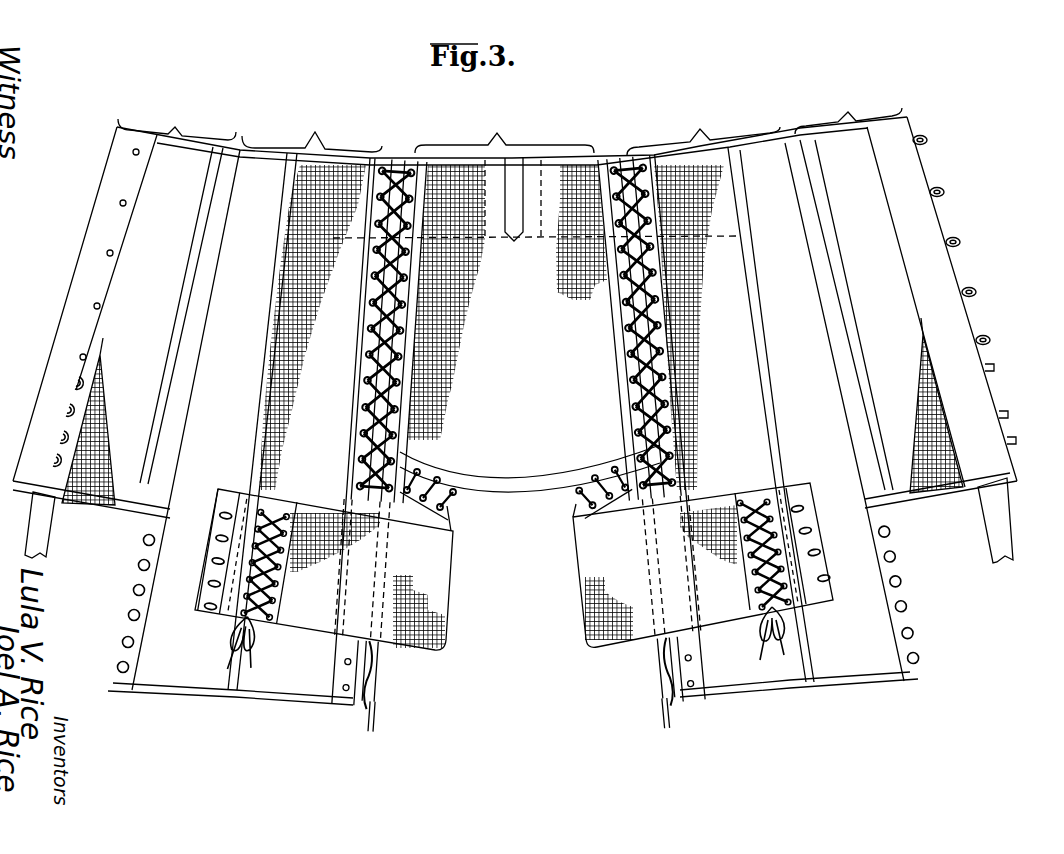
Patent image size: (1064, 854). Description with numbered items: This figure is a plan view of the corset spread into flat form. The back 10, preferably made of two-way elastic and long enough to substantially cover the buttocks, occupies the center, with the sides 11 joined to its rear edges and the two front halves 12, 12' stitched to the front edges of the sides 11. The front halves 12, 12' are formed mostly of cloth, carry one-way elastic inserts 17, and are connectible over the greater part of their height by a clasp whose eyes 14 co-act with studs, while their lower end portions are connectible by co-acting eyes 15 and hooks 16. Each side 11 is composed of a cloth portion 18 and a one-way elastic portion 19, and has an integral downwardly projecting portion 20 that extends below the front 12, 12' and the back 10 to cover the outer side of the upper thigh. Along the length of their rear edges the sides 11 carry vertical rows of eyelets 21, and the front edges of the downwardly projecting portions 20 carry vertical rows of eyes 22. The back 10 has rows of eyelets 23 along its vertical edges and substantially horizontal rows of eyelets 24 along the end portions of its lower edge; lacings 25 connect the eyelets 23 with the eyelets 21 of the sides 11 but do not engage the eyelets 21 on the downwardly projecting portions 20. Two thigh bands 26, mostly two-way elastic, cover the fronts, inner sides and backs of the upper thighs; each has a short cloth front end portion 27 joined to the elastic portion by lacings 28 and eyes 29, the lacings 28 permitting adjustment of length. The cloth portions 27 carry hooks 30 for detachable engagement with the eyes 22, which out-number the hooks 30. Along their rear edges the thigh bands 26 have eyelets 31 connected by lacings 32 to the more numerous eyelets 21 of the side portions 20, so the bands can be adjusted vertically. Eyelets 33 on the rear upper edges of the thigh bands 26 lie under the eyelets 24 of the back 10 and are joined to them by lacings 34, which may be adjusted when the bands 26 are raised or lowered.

The back 10 is at (512, 275).
The sides 11 is at (517, 402).
The front half 12 is at (262, 307).
The front half 12' is at (764, 298).
The eyes 14 is at (94, 304).
The eyes 15 is at (62, 412).
The hooks 16 is at (997, 368).
The one-way elastic inserts 17 is at (88, 515).
The cloth portion 18 is at (518, 416).
The one-way elastic portion 19 is at (525, 420).
The downwardly projecting portions 20 is at (513, 674).
The eyelets 21 is at (362, 345).
The eyes 22 is at (124, 617).
The eyelets 23 is at (398, 378).
The eyelets 24 is at (420, 467).
The lacings 25 is at (405, 319).
The thigh bands 26 is at (440, 614).
The front end portions 27 is at (223, 490).
The lacings 28 is at (273, 502).
The eyes 29 is at (270, 604).
The hooks 30 is at (222, 578).
The eyelets 31 is at (455, 531).
The lacings 32 is at (362, 493).
The eyelets 33 is at (452, 511).
The lacings 34 is at (440, 473).